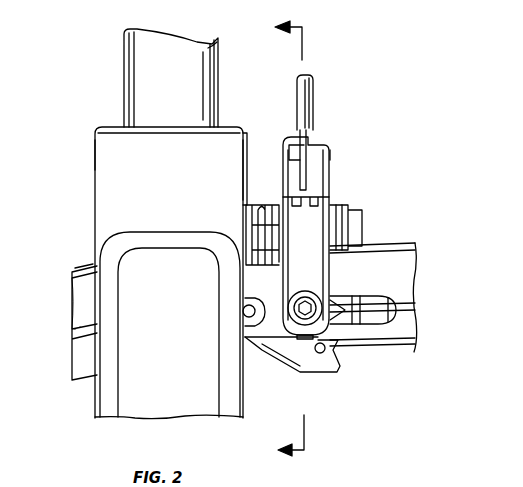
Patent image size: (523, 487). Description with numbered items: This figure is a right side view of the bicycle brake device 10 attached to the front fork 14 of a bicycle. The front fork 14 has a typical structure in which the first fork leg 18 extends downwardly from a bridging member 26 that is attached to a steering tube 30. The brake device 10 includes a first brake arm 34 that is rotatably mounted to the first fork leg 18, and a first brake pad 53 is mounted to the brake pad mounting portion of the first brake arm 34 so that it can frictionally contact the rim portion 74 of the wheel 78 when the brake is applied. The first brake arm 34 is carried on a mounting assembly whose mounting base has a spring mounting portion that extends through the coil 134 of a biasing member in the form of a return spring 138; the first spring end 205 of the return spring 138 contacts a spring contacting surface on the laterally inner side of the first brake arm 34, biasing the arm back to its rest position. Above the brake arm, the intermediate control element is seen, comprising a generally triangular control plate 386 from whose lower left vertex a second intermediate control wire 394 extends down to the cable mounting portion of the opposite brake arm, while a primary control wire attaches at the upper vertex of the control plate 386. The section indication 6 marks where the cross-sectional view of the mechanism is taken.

The section line 6- 6 is at (283, 239).
The bicycle brake device 10 is at (355, 130).
The front fork 14 is at (70, 141).
The first fork leg 18 is at (108, 400).
The bridging member 26 is at (118, 198).
The steering tube 30 is at (138, 68).
The first brake arm 34 is at (340, 273).
The first brake pad 53 is at (296, 365).
The rim portion 74 is at (400, 340).
The wheel 78 is at (393, 230).
The coil 134 is at (246, 206).
The return spring 138 is at (266, 193).
The first spring end 205 is at (258, 283).
The control plate 386 is at (315, 100).
The second intermediate control wire 394 is at (297, 128).